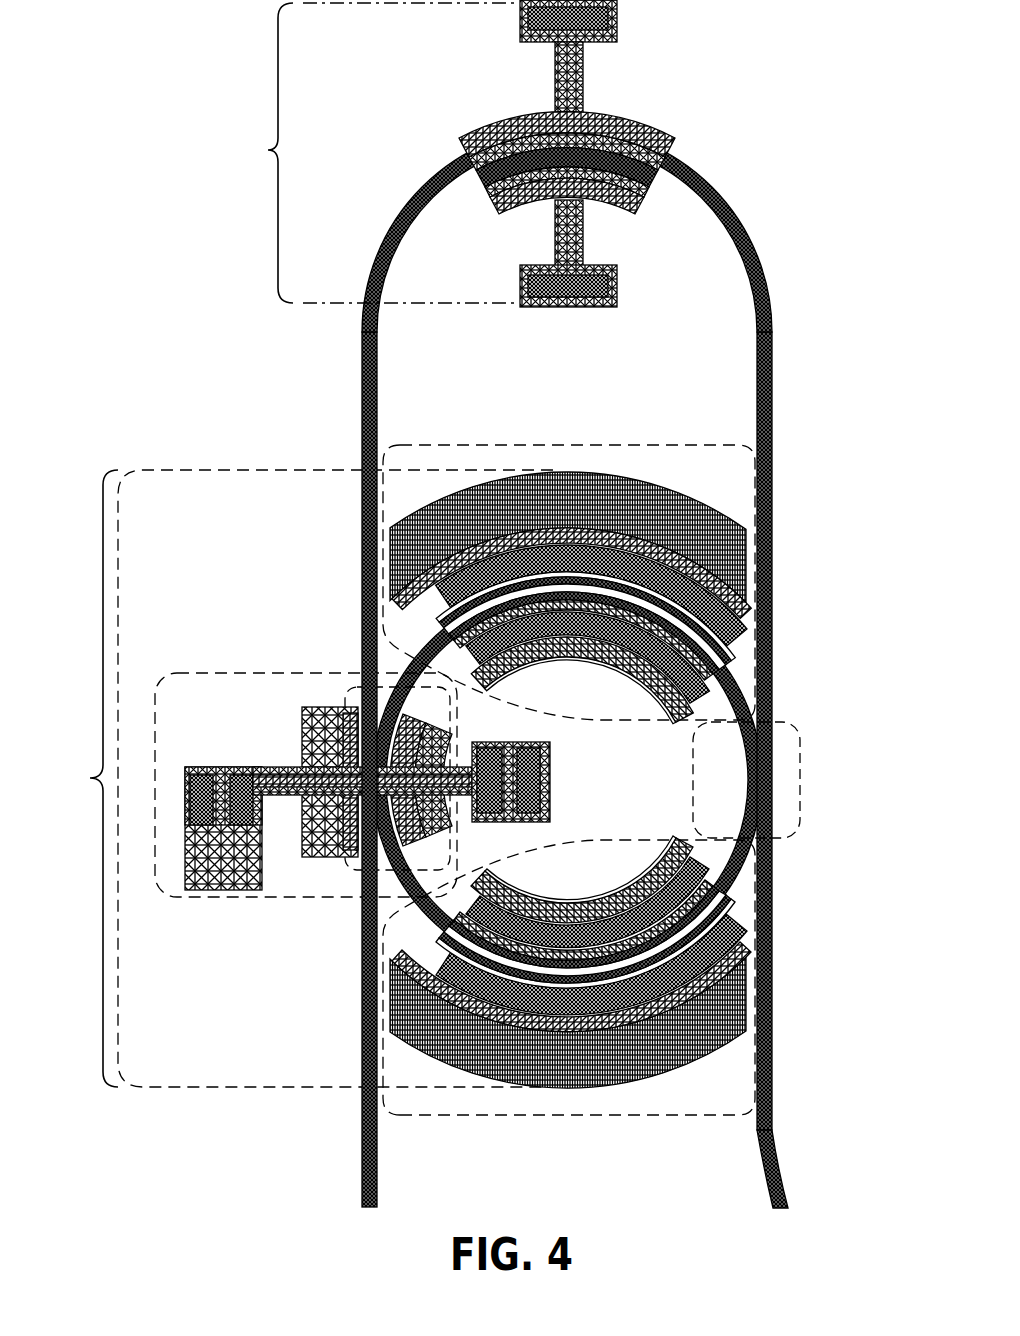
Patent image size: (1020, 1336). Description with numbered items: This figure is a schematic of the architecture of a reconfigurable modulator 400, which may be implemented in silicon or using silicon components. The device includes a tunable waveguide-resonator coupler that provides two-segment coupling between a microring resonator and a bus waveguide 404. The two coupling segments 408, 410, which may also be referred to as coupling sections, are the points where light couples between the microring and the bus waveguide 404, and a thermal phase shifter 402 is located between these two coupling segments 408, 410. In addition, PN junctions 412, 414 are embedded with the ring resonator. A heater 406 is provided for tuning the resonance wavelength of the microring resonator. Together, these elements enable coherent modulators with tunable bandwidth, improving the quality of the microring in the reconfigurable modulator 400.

The reconfigurable modulator 400 is at (738, 90).
The thermal phase shifter 402 is at (447, 153).
The bus waveguide 404 is at (403, 778).
The heater 406 is at (268, 897).
The coupling segment 408 is at (803, 755).
The coupling segment 410 is at (345, 690).
The PN junction 412 is at (652, 447).
The PN junction 414 is at (598, 1113).